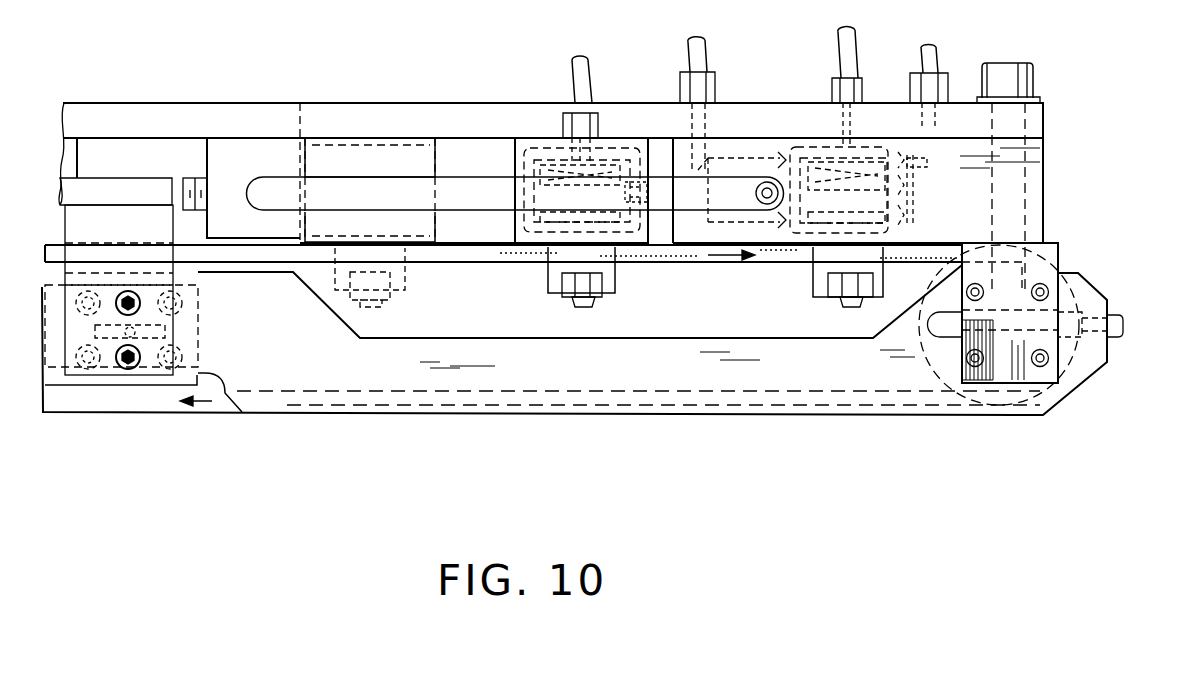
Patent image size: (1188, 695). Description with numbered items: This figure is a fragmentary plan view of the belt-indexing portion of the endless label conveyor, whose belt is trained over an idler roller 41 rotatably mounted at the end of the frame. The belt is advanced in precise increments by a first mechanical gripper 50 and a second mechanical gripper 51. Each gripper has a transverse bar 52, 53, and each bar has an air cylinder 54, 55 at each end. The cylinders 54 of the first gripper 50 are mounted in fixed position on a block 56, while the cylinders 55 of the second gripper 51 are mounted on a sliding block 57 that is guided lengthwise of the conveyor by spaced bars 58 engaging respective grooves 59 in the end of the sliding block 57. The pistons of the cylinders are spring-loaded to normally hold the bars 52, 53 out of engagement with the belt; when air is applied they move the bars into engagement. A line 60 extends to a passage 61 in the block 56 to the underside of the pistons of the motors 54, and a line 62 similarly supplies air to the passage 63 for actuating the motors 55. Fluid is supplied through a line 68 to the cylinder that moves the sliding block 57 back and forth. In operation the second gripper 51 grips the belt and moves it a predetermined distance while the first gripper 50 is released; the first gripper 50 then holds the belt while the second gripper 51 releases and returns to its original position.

The idler roller 41 is at (1028, 398).
The first mechanical gripper 50 is at (868, 309).
The second mechanical gripper 51 is at (600, 310).
The transverse bar 52 is at (822, 268).
The transverse bar 53 is at (553, 265).
The air cylinder 54 is at (870, 165).
The air cylinder 55 is at (608, 165).
The block 56 is at (1030, 157).
The sliding block 57 is at (380, 145).
The spaced bars 58 is at (343, 160).
The grooves 59 is at (515, 182).
The line 60 is at (850, 58).
The passage 61 is at (800, 140).
The line 62 is at (580, 75).
The passage 63 is at (540, 150).
The line 68 is at (697, 60).